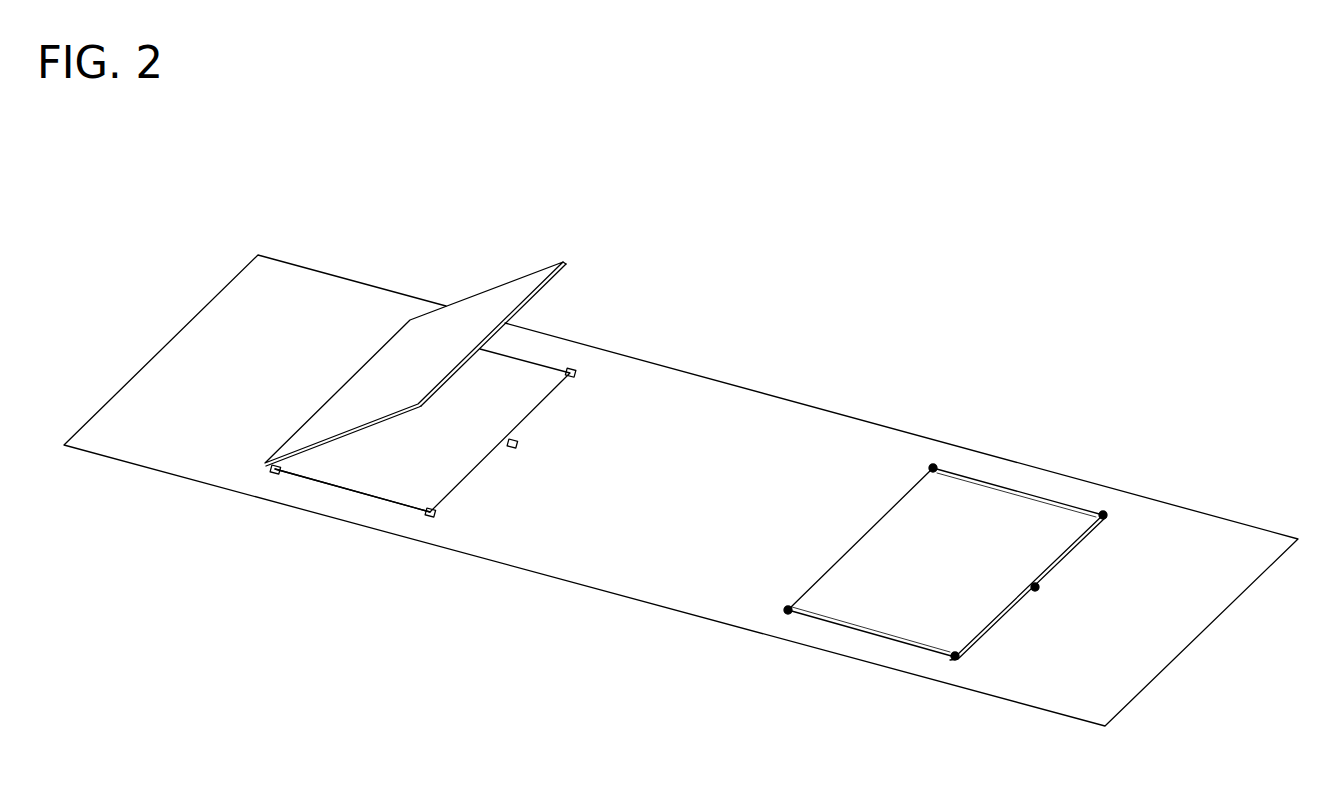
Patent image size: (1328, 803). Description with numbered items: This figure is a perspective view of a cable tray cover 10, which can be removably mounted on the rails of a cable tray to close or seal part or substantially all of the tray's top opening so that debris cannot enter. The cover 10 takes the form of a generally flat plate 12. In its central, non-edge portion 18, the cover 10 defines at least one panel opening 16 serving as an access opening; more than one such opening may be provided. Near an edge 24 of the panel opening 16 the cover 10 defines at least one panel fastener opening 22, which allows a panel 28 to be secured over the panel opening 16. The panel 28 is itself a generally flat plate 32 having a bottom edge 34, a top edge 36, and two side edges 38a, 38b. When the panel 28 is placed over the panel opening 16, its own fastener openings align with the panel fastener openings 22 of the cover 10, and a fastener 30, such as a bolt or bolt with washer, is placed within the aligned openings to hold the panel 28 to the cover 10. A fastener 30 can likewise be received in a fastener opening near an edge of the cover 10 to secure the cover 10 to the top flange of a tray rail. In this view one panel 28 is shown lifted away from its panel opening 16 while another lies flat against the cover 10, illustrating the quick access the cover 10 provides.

The cable tray cover 10 is at (815, 223).
The flat plate 12 is at (647, 585).
The panel opening 16 is at (438, 455).
The central portion 18 is at (762, 440).
The panel fastener opening 22 is at (572, 371).
The edge of panel opening 24 is at (385, 498).
The panel 28 is at (749, 484).
The fastener 30 is at (935, 466).
The flat plate 32 is at (490, 310).
The bottom edge 34 is at (438, 378).
The top edge 36 is at (565, 262).
The side edge 38a is at (323, 443).
The side edge 38b is at (527, 277).